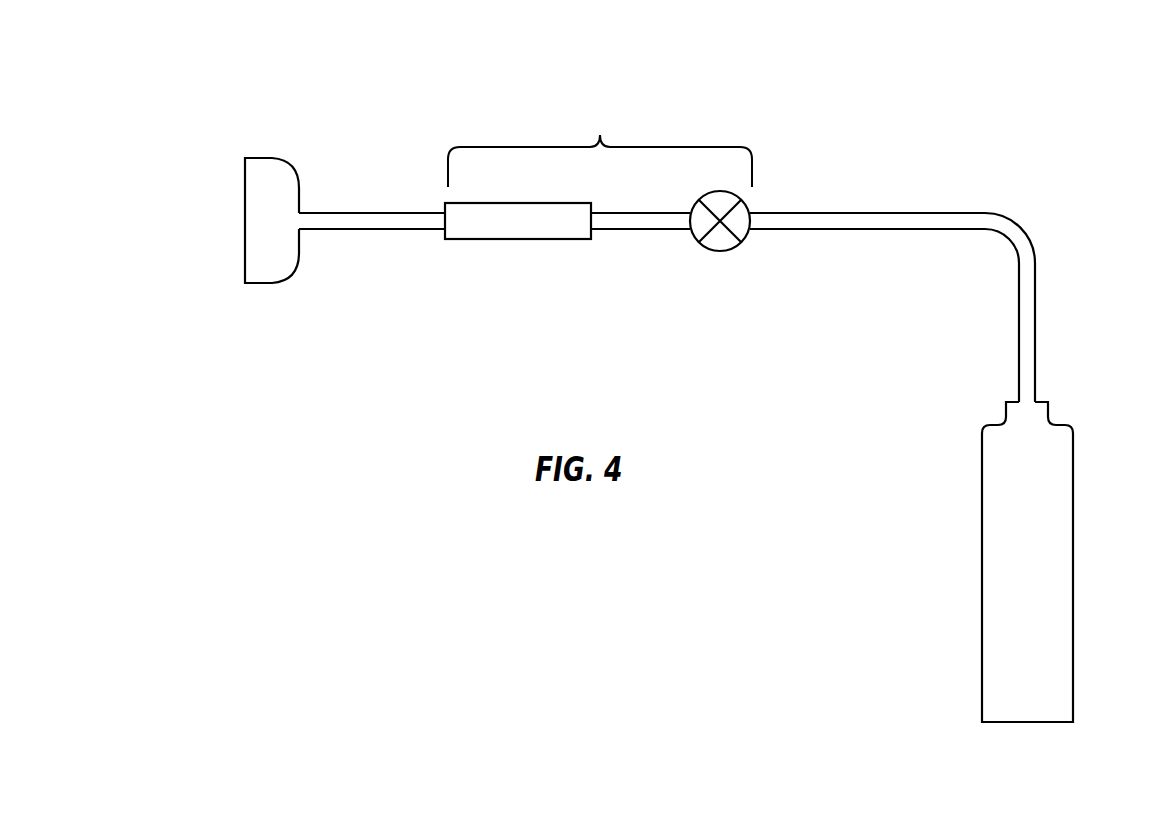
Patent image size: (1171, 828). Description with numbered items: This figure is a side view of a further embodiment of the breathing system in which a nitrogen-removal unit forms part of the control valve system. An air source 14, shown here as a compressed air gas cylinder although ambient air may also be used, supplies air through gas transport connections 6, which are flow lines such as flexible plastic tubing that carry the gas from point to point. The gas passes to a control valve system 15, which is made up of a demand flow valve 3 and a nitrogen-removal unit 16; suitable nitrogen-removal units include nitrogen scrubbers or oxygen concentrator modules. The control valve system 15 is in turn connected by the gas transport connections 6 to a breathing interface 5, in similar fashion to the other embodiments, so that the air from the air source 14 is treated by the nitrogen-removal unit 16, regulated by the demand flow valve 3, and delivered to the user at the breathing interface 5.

The breathing interface 5 is at (240, 241).
The gas transport connections 6 is at (367, 242).
The nitrogen-removal unit 16 is at (485, 244).
The demand flow valve 3 is at (690, 249).
The control valve system 15 is at (600, 129).
The air source 14 is at (1048, 580).